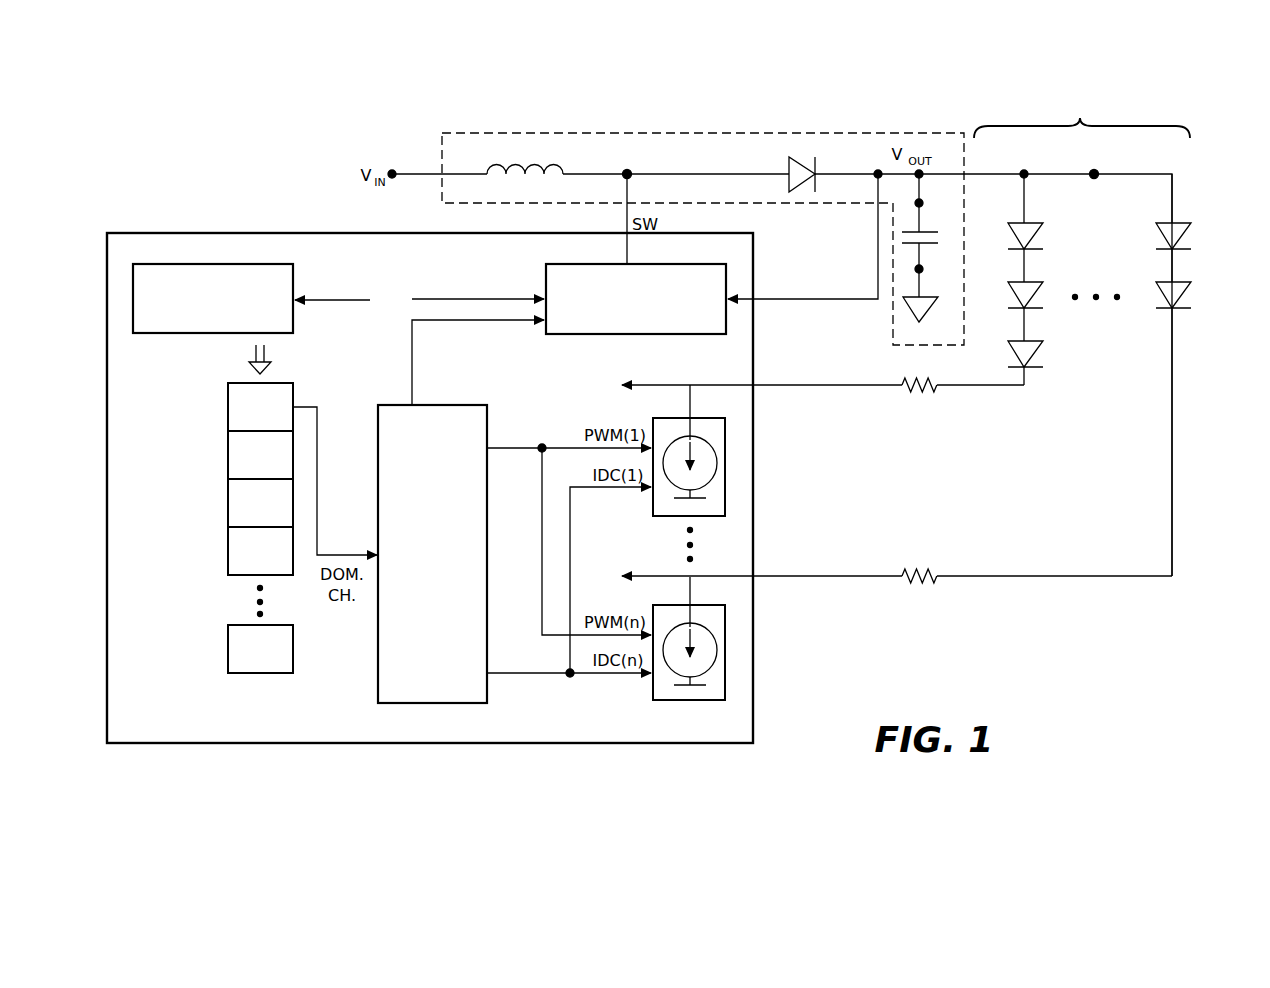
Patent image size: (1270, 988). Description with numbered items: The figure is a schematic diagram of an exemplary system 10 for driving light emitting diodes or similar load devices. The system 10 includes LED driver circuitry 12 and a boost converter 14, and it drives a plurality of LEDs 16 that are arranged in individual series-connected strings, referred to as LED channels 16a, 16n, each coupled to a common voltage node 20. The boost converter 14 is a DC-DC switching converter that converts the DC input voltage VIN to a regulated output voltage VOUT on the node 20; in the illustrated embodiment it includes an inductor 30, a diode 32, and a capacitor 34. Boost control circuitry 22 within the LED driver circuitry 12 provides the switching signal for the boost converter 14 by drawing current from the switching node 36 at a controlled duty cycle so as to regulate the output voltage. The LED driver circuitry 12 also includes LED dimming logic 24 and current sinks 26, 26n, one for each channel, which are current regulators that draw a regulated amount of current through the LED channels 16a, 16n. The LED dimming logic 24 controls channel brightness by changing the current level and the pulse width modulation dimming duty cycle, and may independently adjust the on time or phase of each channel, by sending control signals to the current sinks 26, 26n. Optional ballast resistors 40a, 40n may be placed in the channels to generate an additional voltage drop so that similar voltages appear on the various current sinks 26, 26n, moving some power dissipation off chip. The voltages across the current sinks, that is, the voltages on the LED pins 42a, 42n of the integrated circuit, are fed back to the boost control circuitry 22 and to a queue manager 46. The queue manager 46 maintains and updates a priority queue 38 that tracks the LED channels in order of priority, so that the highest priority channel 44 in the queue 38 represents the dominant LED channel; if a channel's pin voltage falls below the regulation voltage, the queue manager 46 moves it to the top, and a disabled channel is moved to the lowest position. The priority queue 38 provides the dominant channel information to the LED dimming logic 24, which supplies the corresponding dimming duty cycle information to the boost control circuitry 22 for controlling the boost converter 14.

The system 10 is at (336, 90).
The LED driver circuitry 12 is at (193, 232).
The boost converter 14 is at (614, 133).
The plurality of LEDs 16 is at (1122, 192).
The LED channel 16a is at (1027, 195).
The LED channel 16n is at (1170, 195).
The common voltage node 20 is at (1096, 172).
The boost control circuitry 22 is at (569, 334).
The LED dimming logic 24 is at (432, 554).
The current sink 26 is at (697, 418).
The current sink 26n is at (697, 605).
The inductor 30 is at (537, 162).
The diode 32 is at (792, 170).
The capacitor 34 is at (924, 231).
The switching node 36 is at (630, 170).
The priority queue 38 is at (220, 453).
The ballast resistor 40a is at (922, 383).
The ballast resistor 40n is at (922, 574).
The LED pin 42a is at (812, 384).
The LED pin 42n is at (812, 575).
The highest priority channel 44 is at (295, 398).
The queue manager 46 is at (252, 319).